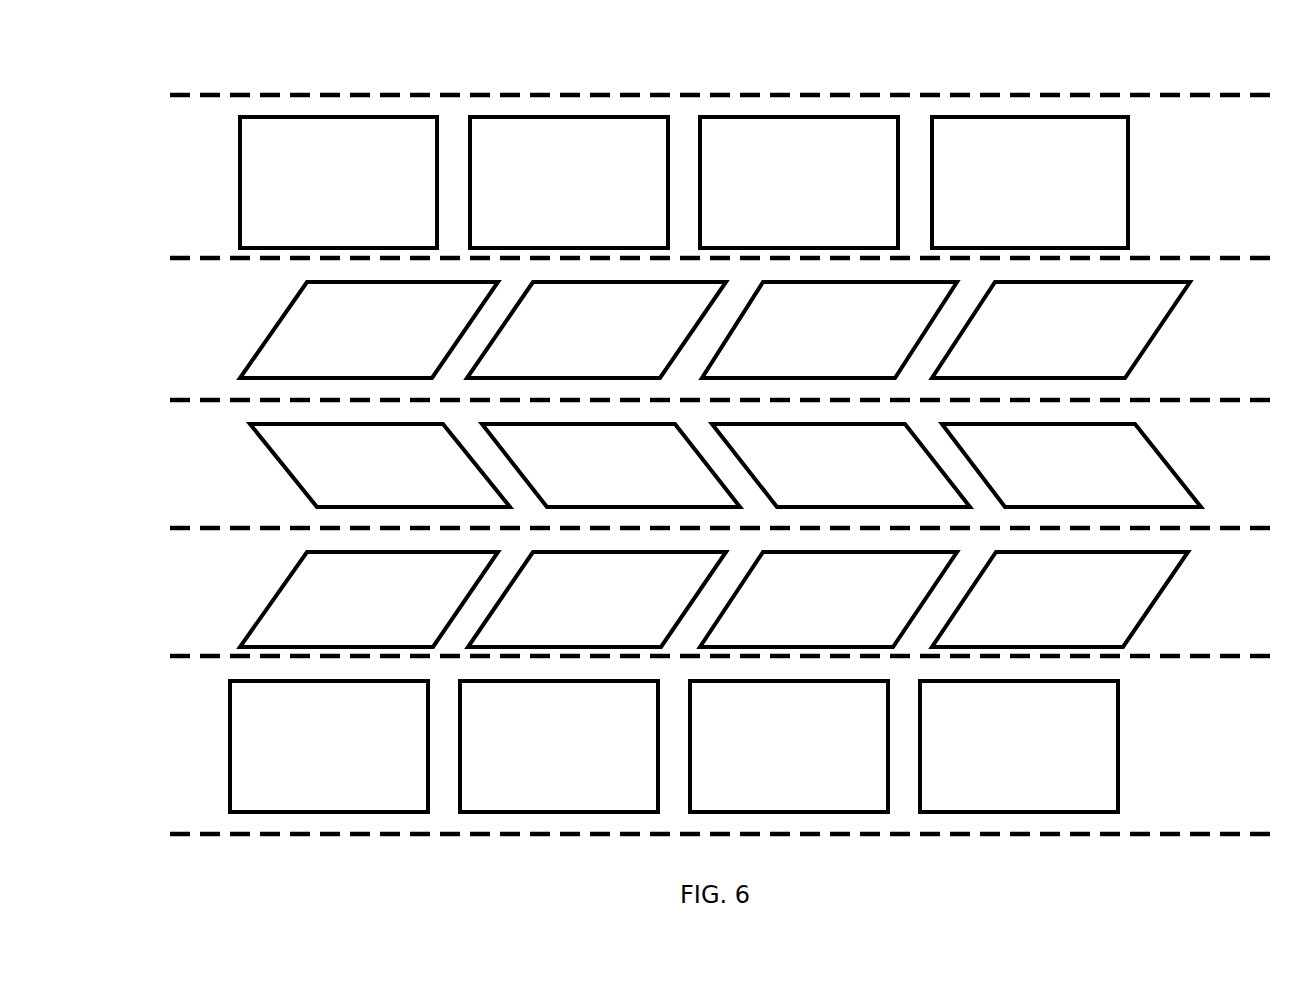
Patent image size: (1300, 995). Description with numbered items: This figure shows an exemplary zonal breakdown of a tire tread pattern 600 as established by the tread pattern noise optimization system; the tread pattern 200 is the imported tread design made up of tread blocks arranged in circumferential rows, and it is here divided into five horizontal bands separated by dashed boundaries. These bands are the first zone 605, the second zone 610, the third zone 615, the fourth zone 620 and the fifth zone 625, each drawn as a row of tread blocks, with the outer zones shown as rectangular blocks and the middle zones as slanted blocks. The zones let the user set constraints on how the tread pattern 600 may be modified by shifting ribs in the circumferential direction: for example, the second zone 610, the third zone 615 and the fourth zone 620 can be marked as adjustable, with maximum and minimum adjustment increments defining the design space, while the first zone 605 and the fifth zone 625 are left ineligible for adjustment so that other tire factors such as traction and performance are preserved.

The tread pattern 200 is at (270, 165).
The tread pattern 600 is at (690, 423).
The zone 1 605 is at (675, 165).
The zone 2 610 is at (1257, 368).
The zone 3 615 is at (1257, 508).
The zone 4 620 is at (1257, 627).
The zone 5 625 is at (1257, 767).